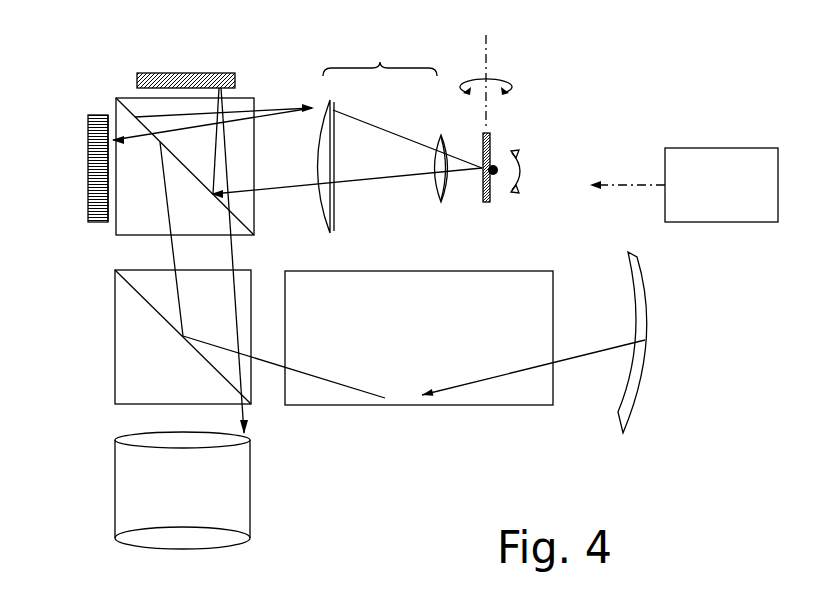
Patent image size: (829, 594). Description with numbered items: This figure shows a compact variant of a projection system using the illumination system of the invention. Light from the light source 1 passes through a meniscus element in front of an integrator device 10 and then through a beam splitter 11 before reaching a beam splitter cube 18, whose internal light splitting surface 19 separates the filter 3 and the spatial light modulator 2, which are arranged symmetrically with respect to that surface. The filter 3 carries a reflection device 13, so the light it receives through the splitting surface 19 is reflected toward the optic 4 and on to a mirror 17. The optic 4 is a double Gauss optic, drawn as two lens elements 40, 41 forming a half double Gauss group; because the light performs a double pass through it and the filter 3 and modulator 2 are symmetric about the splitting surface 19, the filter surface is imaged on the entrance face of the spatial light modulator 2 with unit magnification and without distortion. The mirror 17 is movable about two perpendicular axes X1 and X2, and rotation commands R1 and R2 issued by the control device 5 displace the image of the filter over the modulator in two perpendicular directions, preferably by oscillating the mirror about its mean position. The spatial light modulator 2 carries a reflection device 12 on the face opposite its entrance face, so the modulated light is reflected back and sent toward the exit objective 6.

The light source 1 is at (652, 342).
The spatial light modulator 2 is at (235, 80).
The filter 3 is at (98, 225).
The optic 4 is at (409, 144).
The control device 5 is at (722, 148).
The exit objective 6 is at (251, 488).
The integrator device 10 is at (417, 405).
The beam splitter 11 is at (115, 336).
The reflection device 12 is at (187, 73).
The reflection device 13 is at (88, 170).
The mirror 17 is at (495, 200).
The beam splitter cube 18 is at (152, 202).
The light splitting surface 19 is at (125, 117).
The plano-convex lens 40 is at (360, 98).
The biconvex lens 41 is at (440, 140).
The first axis X1 is at (493, 163).
The second axis X2 is at (485, 75).
The rotation command R1 is at (522, 175).
The rotation command R2 is at (502, 82).